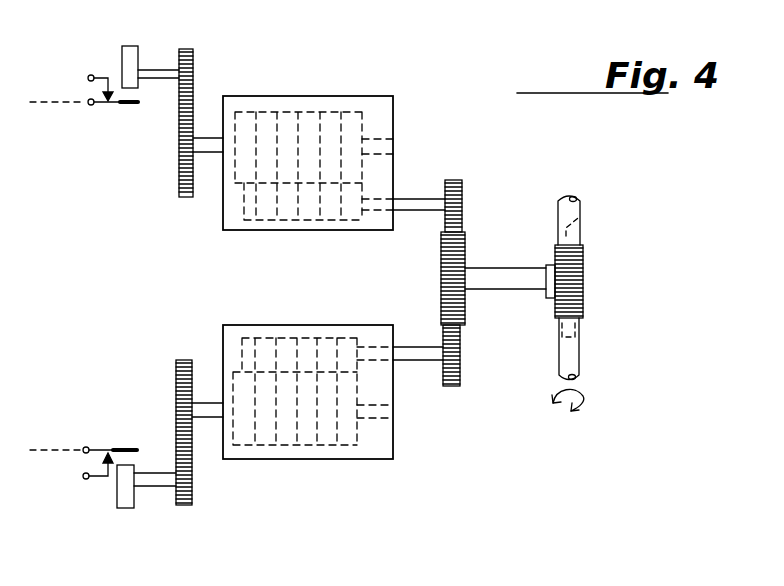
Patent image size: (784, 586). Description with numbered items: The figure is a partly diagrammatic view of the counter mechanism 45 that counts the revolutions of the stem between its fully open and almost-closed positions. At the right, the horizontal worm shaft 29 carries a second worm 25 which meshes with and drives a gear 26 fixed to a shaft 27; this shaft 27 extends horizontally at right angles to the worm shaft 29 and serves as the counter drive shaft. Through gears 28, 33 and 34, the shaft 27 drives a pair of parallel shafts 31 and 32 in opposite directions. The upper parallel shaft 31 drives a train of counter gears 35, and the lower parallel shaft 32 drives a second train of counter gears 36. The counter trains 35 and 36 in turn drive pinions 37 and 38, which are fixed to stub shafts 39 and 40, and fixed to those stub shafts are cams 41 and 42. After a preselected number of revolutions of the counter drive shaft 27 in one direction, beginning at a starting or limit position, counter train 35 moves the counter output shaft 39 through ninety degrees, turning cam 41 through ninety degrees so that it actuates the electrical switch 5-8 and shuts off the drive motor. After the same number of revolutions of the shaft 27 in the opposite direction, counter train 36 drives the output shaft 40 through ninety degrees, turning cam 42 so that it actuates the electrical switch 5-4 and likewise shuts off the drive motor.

The counter mechanism 45 is at (418, 56).
The cam 41 is at (124, 60).
The stub shaft 39 is at (160, 72).
The pinion 37 is at (193, 51).
The switch 5-8 is at (122, 108).
The counter train 35 is at (266, 106).
The parallel shaft 31 is at (417, 203).
The gear 33 is at (462, 191).
The gear 28 is at (441, 265).
The shaft 27 is at (487, 273).
The second worm 25 is at (584, 278).
The gear 26 is at (580, 222).
The worm shaft 29 is at (573, 359).
The gear 34 is at (460, 372).
The parallel shaft 32 is at (420, 356).
The counter train 36 is at (308, 438).
The pinion 38 is at (192, 492).
The stub shaft 40 is at (160, 480).
The cam 42 is at (122, 500).
The switch 5-4 is at (122, 446).